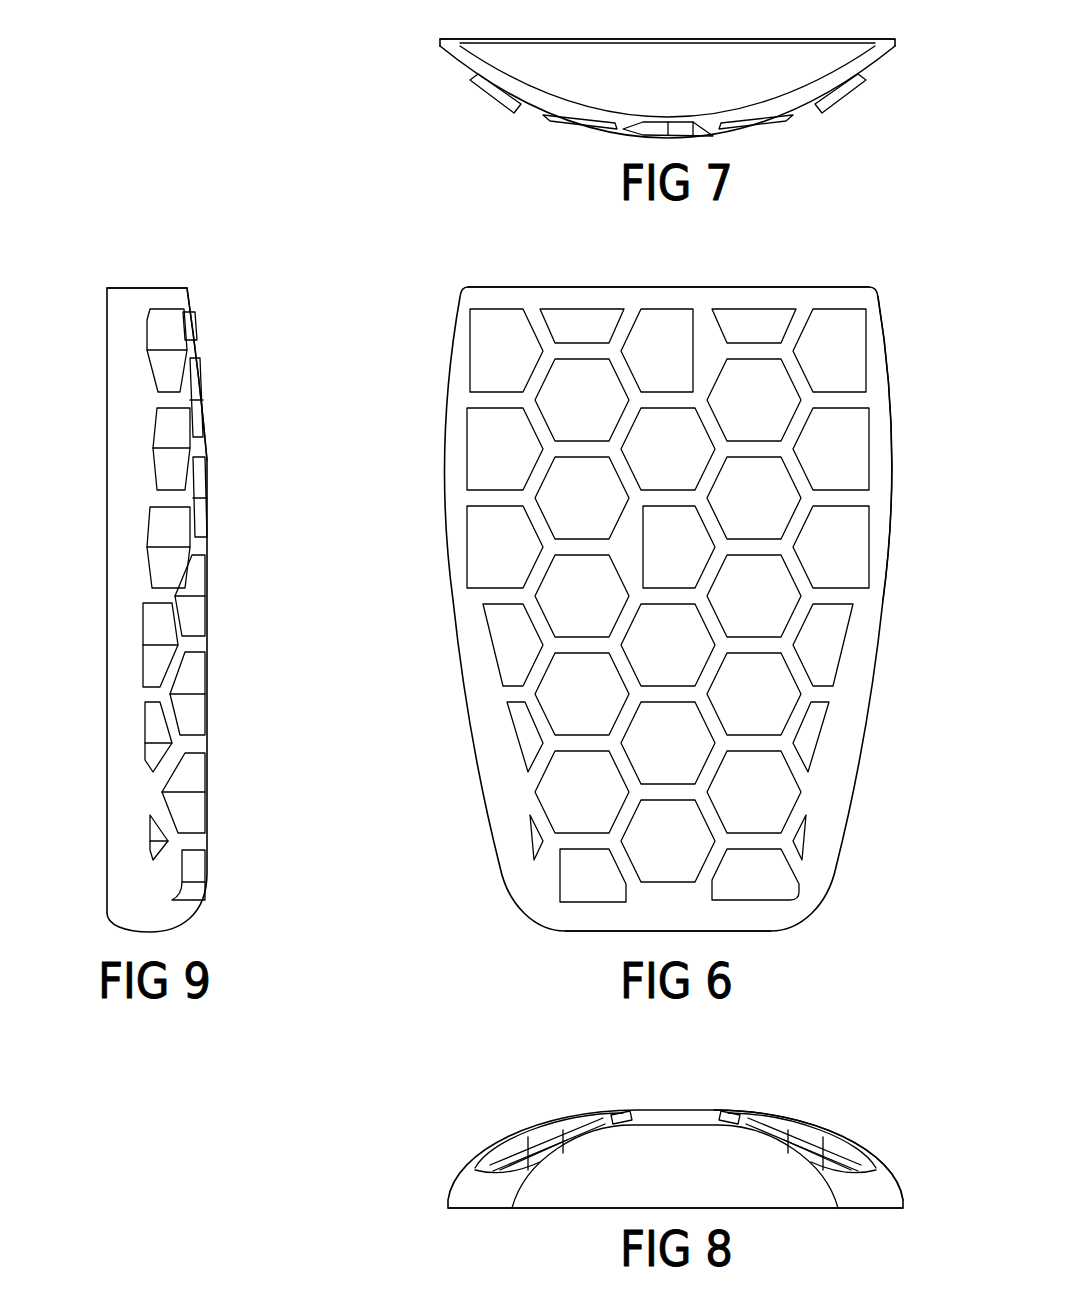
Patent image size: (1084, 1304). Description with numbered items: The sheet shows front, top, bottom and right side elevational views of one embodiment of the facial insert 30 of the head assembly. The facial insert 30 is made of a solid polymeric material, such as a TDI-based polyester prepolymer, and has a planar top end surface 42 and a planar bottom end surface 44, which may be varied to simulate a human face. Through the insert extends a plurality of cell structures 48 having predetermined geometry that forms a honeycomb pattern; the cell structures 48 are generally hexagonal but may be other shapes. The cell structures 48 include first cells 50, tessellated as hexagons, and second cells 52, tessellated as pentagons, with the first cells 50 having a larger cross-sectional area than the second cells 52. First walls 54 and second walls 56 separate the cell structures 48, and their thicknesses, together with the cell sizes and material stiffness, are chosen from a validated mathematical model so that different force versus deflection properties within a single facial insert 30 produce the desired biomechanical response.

In FIG. 7, the facial insert 30 is at (890, 45).
In FIG. 6, the facial insert 30 is at (897, 493).
In FIG. 9, the facial insert 30 is at (107, 645).
In FIG. 8, the facial insert 30 is at (457, 1198).
In FIG. 7, the planar top end surface 42 is at (687, 89).
In FIG. 6, the planar top end surface 42 is at (661, 286).
In FIG. 9, the planar top end surface 42 is at (148, 287).
In FIG. 6, the planar bottom end surface 44 is at (603, 931).
In FIG. 8, the planar bottom end surface 44 is at (689, 1184).
In FIG. 7, the cell structures 48 is at (853, 126).
In FIG. 6, the cell structures 48 is at (888, 345).
In FIG. 9, the cell structures 48 is at (212, 398).
In FIG. 8, the cell structures 48 is at (860, 1117).
In FIG. 6, the first cells 50 is at (784, 605).
In FIG. 6, the second cells 52 is at (473, 442).
In FIG. 6, the first walls 54 is at (625, 669).
In FIG. 6, the second walls 56 is at (710, 350).